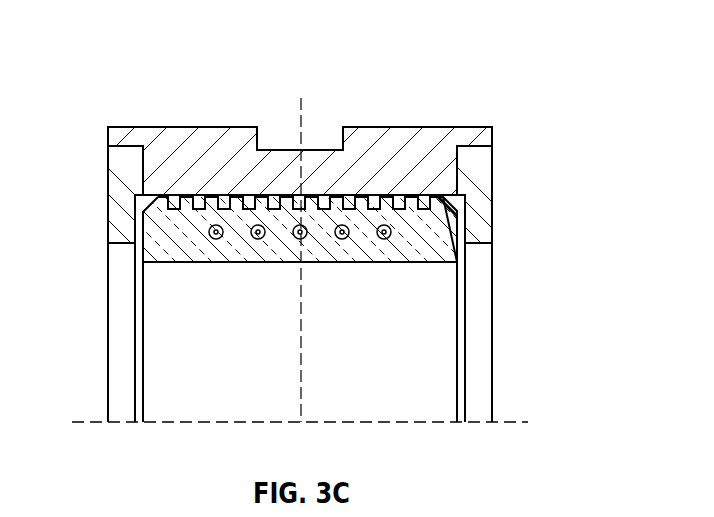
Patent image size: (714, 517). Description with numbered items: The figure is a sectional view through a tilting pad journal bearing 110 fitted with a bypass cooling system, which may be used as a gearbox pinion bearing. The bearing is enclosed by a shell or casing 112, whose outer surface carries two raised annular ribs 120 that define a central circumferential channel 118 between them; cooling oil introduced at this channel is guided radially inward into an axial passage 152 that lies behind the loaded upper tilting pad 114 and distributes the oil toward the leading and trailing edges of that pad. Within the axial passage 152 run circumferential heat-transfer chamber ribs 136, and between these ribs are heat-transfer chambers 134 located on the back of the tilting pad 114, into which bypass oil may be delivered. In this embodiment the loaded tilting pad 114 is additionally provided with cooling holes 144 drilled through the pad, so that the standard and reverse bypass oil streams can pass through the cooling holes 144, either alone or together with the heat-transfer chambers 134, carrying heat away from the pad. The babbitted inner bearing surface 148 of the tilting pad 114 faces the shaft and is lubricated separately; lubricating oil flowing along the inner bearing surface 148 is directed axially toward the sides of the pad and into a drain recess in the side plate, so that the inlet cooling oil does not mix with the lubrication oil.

The tilting pad journal bearing 110 is at (122, 32).
The casing 112 is at (483, 133).
The tilting pad 114 is at (447, 245).
The central circumferential channel 118 is at (313, 148).
The raised annular rib 120 is at (148, 127).
The heat-transfer chamber 134 is at (408, 218).
The heat-transfer chamber rib 136 is at (187, 196).
The cooling hole 144 is at (255, 240).
The inner bearing surface 148 is at (190, 263).
The axial passage 152 is at (462, 195).